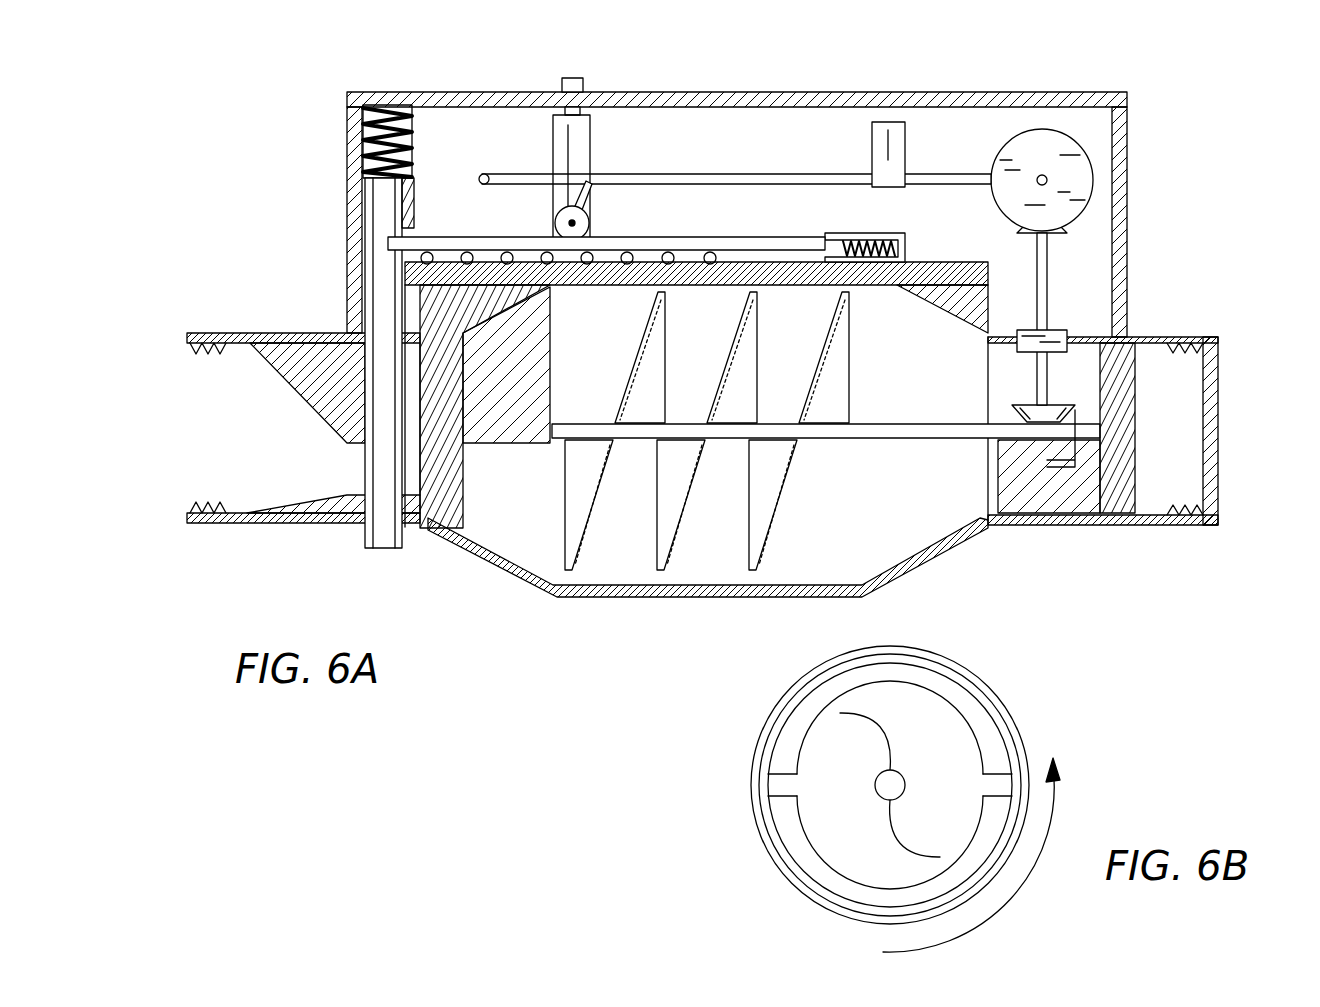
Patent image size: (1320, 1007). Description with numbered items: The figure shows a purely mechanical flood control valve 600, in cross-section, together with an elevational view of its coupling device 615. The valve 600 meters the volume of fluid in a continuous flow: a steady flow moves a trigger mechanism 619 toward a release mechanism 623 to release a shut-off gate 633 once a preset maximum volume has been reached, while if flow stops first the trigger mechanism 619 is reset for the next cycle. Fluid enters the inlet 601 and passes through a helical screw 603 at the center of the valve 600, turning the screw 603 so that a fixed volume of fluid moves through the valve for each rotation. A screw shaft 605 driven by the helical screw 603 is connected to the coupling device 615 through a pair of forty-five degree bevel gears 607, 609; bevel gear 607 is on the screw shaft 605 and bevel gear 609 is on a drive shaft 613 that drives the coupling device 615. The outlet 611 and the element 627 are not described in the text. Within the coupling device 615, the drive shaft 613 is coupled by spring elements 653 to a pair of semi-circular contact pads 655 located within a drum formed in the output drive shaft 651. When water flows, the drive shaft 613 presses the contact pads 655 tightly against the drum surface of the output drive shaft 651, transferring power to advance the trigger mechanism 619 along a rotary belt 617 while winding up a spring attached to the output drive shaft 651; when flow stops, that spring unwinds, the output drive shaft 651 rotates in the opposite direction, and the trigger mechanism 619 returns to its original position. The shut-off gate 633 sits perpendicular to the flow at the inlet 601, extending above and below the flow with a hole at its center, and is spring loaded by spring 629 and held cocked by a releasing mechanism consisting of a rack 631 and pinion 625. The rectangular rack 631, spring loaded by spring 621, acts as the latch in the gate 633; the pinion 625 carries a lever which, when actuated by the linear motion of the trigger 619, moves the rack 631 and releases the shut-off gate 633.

In FIG. 6A, the flood control valve 600 is at (207, 100).
In FIG. 6A, the inlet 601 is at (212, 333).
In FIG. 6A, the helical screw 603 is at (563, 523).
In FIG. 6A, the screw shaft 605 is at (975, 440).
In FIG. 6A, the bevel gear 607 is at (1100, 505).
In FIG. 6A, the bevel gear 609 is at (1065, 402).
In FIG. 6A, the outlet conduit 611 is at (1173, 338).
In FIG. 6A, the drive shaft 613 is at (1048, 280).
In FIG. 6B, the drive shaft 613 is at (888, 793).
In FIG. 6A, the coupling device 615 is at (1085, 158).
In FIG. 6B, the coupling device 615 is at (1008, 660).
In FIG. 6A, the rotary belt 617 is at (952, 172).
In FIG. 6A, the trigger mechanism 619 is at (884, 126).
In FIG. 6A, the spring 621 is at (881, 246).
In FIG. 6A, the release mechanism 623 is at (582, 125).
In FIG. 6A, the pinion 625 is at (560, 218).
In FIG. 6A, the rod end pin 627 is at (482, 172).
In FIG. 6A, the spring 629 is at (360, 140).
In FIG. 6A, the rack 631 is at (443, 240).
In FIG. 6A, the shut-off gate 633 is at (392, 308).
In FIG. 6B, the output drive shaft 651 is at (793, 688).
In FIG. 6B, the spring elements 653 is at (918, 848).
In FIG. 6B, the contact pads 655 is at (888, 672).